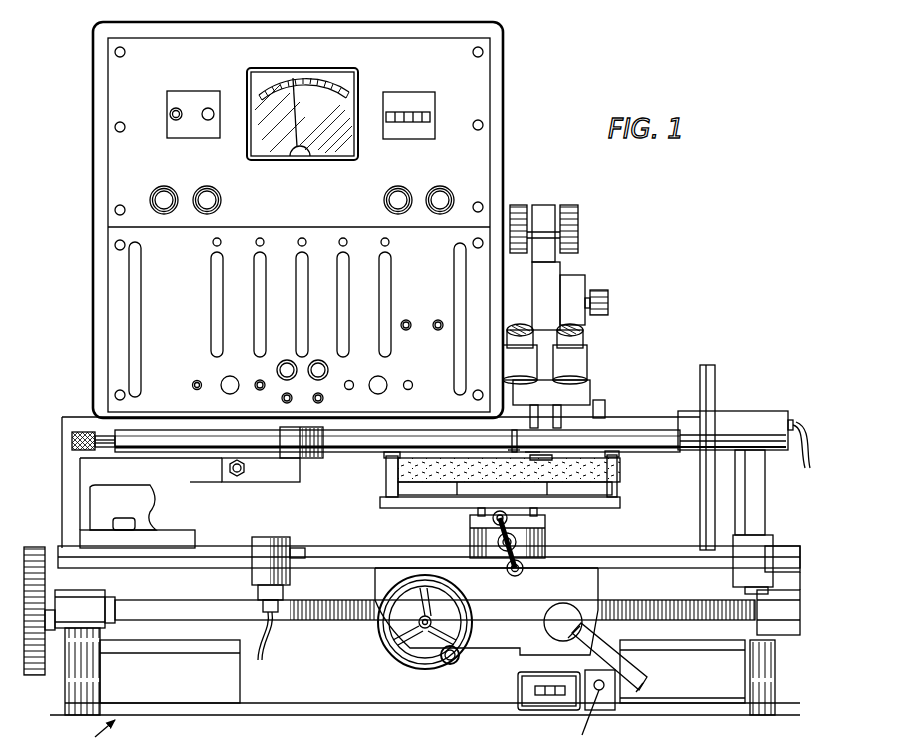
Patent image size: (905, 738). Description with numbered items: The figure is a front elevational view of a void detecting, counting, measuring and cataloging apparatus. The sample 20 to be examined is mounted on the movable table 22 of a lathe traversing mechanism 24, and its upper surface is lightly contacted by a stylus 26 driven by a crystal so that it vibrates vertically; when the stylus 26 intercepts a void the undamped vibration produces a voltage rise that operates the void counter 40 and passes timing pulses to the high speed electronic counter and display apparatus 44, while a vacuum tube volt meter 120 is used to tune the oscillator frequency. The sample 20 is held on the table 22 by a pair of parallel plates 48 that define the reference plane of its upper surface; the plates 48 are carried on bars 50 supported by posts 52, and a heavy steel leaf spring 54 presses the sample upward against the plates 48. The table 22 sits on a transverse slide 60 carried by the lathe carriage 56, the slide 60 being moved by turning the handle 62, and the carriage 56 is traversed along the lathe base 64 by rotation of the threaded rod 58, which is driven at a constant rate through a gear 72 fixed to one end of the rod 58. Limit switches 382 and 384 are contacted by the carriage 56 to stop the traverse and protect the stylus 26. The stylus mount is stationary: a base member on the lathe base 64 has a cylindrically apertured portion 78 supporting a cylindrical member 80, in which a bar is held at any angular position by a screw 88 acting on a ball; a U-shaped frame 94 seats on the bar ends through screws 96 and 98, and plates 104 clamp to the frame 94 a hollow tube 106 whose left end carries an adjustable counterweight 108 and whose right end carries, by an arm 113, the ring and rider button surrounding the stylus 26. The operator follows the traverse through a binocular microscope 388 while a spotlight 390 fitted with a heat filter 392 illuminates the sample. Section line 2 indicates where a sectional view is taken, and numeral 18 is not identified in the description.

The vacuum tube volt meter 120 is at (345, 95).
The void counter 40 is at (420, 112).
The high speed electronic counter and display apparatus 44 is at (205, 283).
The binocular microscope 388 is at (590, 277).
The hollow tube 106 is at (97, 418).
The counterweight 108 is at (80, 433).
The section line 2 is at (47, 448).
The cylindrically apertured portion 78 is at (97, 470).
The cylindrical member 80 is at (210, 486).
The U-shaped frame 94 is at (275, 482).
The screw 98 is at (238, 478).
The plates 104 is at (315, 460).
The movable table 22 is at (478, 488).
The parallel plates 48 is at (398, 455).
The bars 50 is at (387, 478).
The posts 52 is at (432, 494).
The leaf spring 54 is at (535, 485).
The sample 20 is at (612, 470).
The post cap 18 is at (614, 455).
The arm 113 is at (510, 452).
The stylus 26 is at (557, 452).
The heat filter 392 is at (678, 430).
The spotlight 390 is at (730, 411).
The limit switch 384 is at (757, 548).
The screw 96 is at (425, 642).
The screw 88 is at (751, 689).
The gear 72 is at (33, 548).
The threaded rod 58 is at (625, 612).
The lathe carriage 56 is at (534, 607).
The handle 62 is at (470, 522).
The transverse slide 60 is at (545, 530).
The limit switch 382 is at (262, 573).
The lathe base 64 is at (215, 676).
The lathe traversing mechanism 24 is at (540, 690).